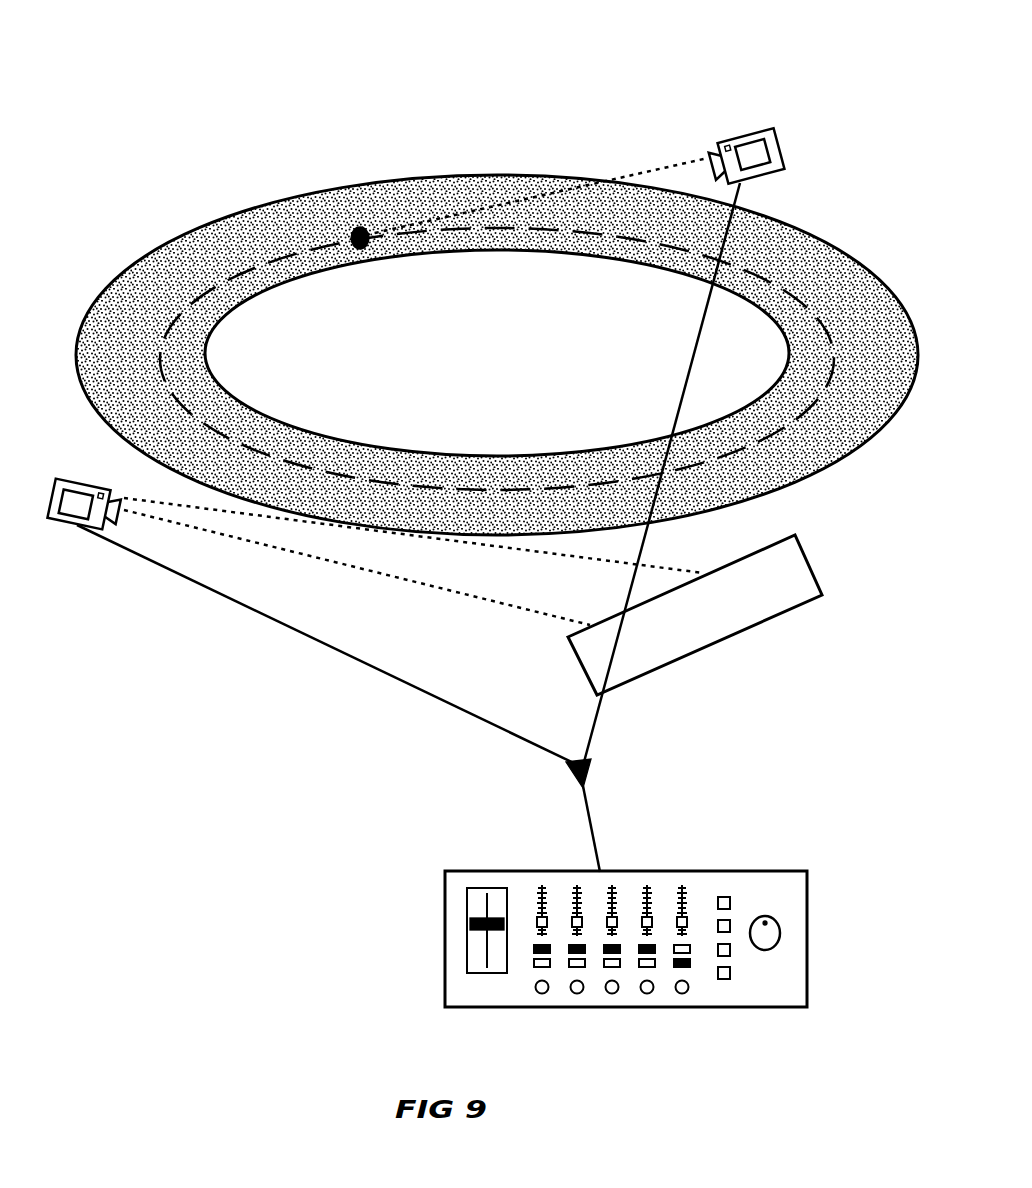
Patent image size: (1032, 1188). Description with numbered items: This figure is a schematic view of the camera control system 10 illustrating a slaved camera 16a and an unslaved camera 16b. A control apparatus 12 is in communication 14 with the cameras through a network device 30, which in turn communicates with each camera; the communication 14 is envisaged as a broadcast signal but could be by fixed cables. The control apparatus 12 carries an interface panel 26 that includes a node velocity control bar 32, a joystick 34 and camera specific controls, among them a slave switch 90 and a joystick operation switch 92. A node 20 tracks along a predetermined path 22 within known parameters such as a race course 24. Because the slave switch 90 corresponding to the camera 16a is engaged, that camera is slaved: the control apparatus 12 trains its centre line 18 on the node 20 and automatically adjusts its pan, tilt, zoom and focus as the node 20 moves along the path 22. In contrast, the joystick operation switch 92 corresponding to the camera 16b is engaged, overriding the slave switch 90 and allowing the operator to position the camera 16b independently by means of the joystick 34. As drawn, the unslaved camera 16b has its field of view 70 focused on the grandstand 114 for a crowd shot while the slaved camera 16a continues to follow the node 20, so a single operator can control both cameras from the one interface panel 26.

The camera control system 10 is at (655, 72).
The control apparatus 12 is at (623, 918).
The communication 14 is at (195, 584).
The slaved camera 16a is at (781, 148).
The unslaved camera 16b is at (72, 522).
The centre line 18 is at (621, 181).
The node 20 is at (358, 228).
The predetermined path 22 is at (207, 287).
The race course 24 is at (823, 452).
The interface panel 26 is at (713, 877).
The network device 30 is at (592, 767).
The node velocity control bar 32 is at (467, 922).
The joystick 34 is at (782, 932).
The field of view 70 is at (495, 583).
The slave switch 90 is at (533, 948).
The joystick operation switch 92 is at (688, 967).
The grandstand 114 is at (700, 635).